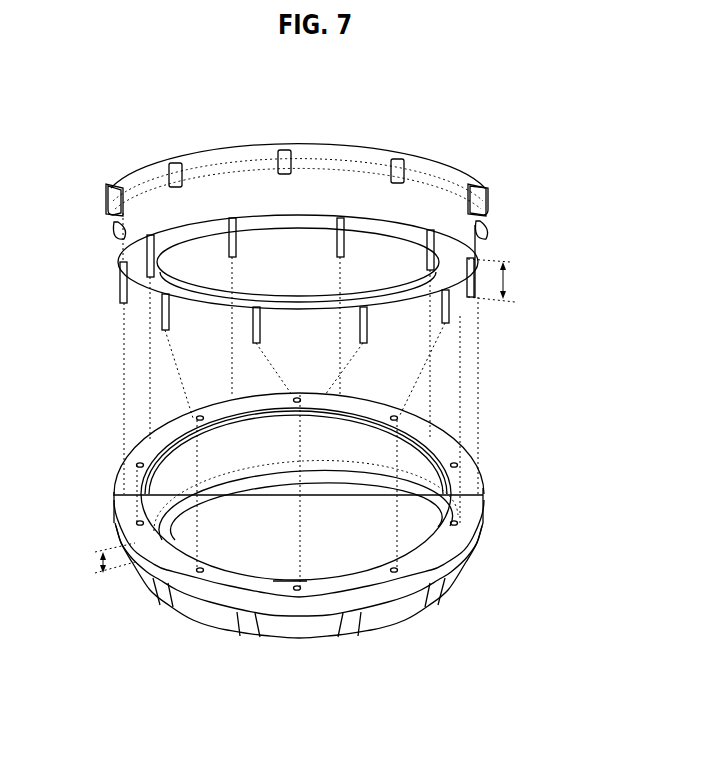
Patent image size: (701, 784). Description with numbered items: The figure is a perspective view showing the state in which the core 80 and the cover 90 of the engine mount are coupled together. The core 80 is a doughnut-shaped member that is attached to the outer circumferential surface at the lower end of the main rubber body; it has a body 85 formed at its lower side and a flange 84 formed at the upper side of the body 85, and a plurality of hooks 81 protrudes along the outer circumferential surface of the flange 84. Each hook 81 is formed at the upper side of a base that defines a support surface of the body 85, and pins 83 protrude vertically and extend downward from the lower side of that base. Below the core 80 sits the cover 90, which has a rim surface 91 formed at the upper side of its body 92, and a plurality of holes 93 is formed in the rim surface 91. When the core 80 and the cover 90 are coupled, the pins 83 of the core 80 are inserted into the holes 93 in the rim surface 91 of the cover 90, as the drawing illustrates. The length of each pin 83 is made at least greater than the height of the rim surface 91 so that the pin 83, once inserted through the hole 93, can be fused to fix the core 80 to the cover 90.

The core 80 is at (318, 207).
The hook 81 is at (283, 142).
The pin 83 is at (122, 280).
The flange 84 is at (347, 145).
The body 85 is at (226, 192).
The cover 90 is at (323, 549).
The rim surface 91 is at (460, 548).
The body 92 is at (398, 612).
The hole 93 is at (455, 462).